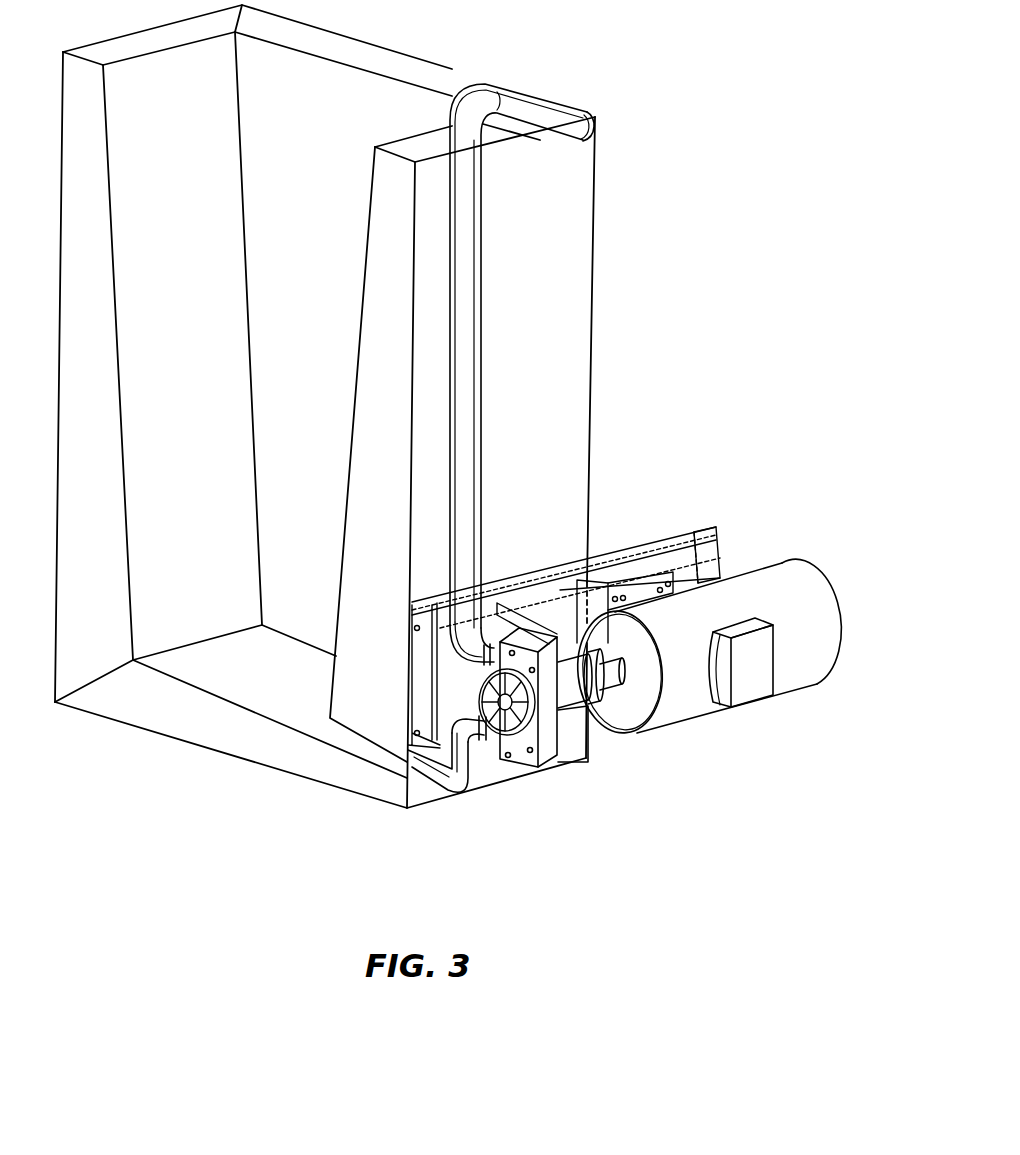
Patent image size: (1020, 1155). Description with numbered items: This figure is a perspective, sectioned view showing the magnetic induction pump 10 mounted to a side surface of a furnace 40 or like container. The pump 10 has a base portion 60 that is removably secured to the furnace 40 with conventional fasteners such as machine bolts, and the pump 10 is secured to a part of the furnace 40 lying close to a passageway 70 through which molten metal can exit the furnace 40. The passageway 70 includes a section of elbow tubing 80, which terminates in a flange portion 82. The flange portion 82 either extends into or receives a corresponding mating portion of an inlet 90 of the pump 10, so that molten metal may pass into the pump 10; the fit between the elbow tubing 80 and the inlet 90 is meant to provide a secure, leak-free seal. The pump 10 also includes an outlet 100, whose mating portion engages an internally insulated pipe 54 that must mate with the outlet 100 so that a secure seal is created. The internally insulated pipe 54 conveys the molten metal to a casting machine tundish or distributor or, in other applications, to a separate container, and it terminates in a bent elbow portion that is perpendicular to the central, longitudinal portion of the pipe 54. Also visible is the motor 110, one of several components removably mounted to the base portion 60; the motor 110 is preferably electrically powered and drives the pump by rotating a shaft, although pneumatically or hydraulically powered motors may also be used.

The magnetic induction pump 10 is at (641, 770).
The furnace 40 is at (333, 40).
The internally insulated pipe 54 is at (543, 92).
The base portion 60 is at (688, 538).
The passageway 70 is at (378, 748).
The elbow tubing 80 is at (457, 793).
The flange portion 82 is at (476, 738).
The inlet 90 is at (506, 735).
The outlet 100 is at (484, 648).
The motor 110 is at (795, 670).